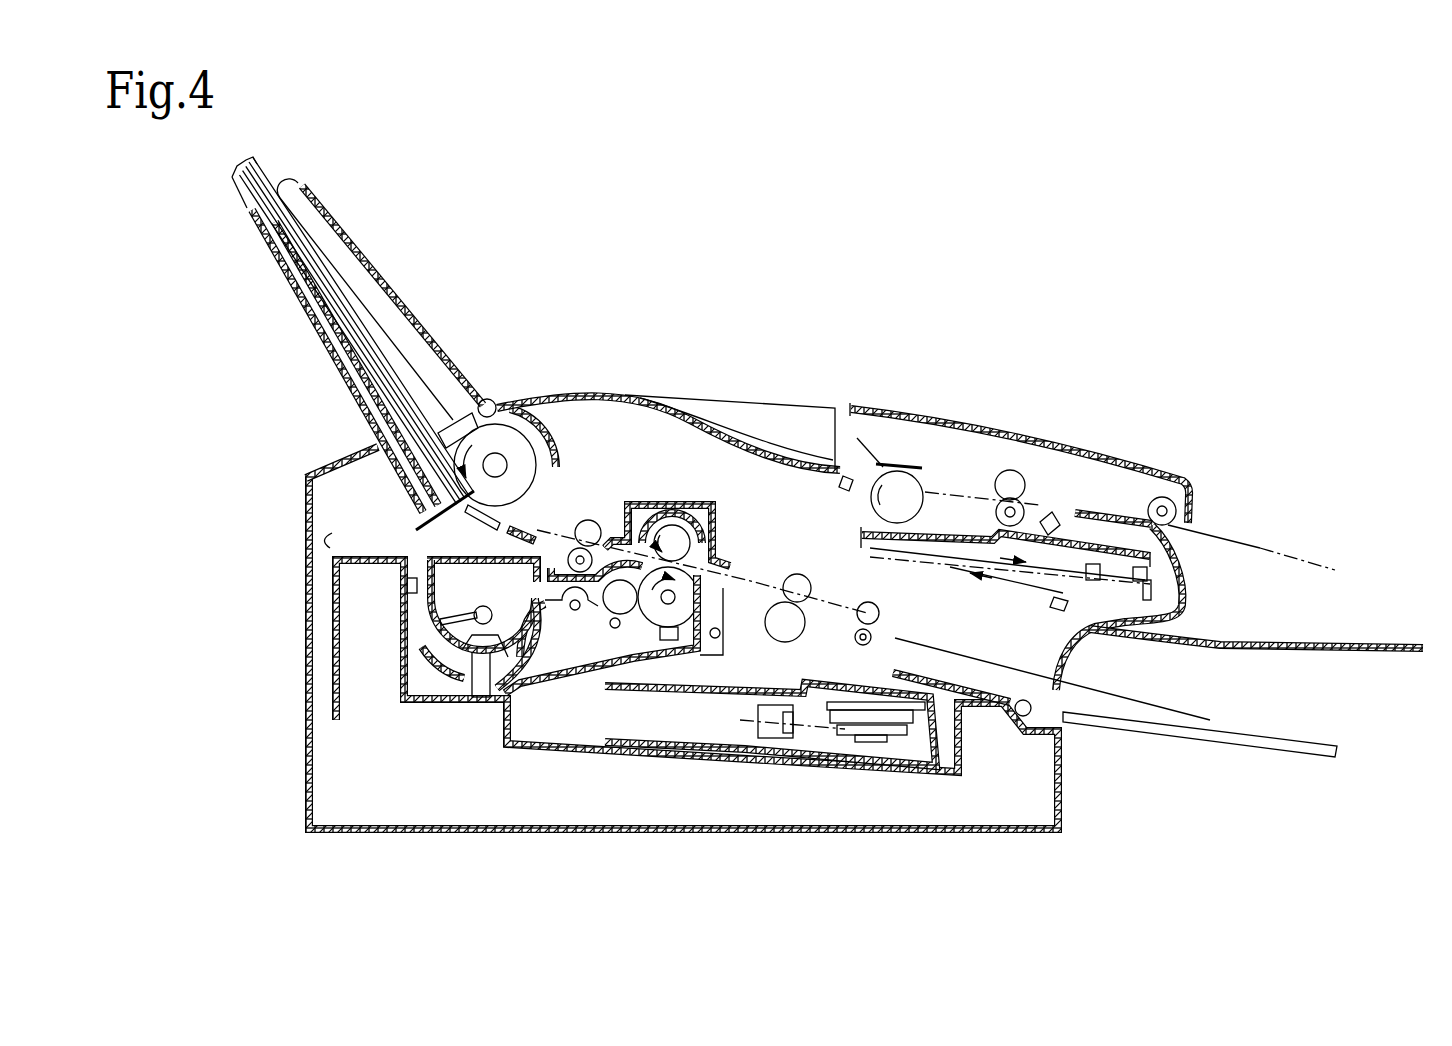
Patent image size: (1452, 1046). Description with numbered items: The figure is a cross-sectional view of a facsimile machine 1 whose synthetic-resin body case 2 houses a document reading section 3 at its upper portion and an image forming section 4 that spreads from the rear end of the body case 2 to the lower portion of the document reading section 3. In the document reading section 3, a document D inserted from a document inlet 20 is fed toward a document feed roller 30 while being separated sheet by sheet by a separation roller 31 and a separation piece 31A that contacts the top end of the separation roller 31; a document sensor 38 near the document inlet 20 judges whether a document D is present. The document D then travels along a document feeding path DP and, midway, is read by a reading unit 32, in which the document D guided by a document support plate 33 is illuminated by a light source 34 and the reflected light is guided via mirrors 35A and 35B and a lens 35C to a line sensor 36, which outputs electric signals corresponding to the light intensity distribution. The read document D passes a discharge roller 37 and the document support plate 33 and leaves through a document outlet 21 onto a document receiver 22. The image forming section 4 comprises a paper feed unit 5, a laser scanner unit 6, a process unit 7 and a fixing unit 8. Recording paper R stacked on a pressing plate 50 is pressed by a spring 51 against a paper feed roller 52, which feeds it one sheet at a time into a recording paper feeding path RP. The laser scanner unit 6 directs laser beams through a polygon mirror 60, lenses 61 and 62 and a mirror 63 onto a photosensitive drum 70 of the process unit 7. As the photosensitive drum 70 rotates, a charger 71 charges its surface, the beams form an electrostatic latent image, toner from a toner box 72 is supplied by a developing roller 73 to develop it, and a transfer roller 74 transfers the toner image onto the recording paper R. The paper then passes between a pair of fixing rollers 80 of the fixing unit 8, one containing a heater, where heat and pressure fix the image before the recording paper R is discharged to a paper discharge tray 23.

The facsimile machine 1 is at (908, 282).
The body case 2 is at (562, 398).
The document reading section 3 is at (1000, 468).
The image forming section 4 is at (378, 533).
The paper feed unit 5 is at (432, 282).
The laser scanner unit 6 is at (907, 788).
The process unit 7 is at (641, 478).
The fixing unit 8 is at (817, 620).
The document inlet 20 is at (824, 443).
The document outlet 21 is at (1195, 541).
The document receiver 22 is at (1365, 643).
The paper discharge tray 23 is at (1282, 750).
The document feed roller 30 is at (1010, 478).
The separation roller 31 is at (915, 492).
The separation piece 31A is at (880, 465).
The reading unit 32 is at (1140, 563).
The document support plate 33 is at (1108, 543).
The light source 34 is at (1060, 595).
The mirror 35A is at (1050, 607).
The mirror 35B is at (868, 548).
The lens 35C is at (1092, 582).
The line sensor 36 is at (1148, 598).
The discharge roller 37 is at (1168, 503).
The document sensor 38 is at (838, 487).
The pressing plate 50 is at (303, 318).
The spring 51 is at (345, 452).
The paper feed roller 52 is at (500, 440).
The polygon mirror 60 is at (873, 715).
The lens 61 is at (769, 738).
The lens 62 is at (617, 675).
The mirror 63 is at (640, 642).
The photosensitive drum 70 is at (680, 617).
The charger 71 is at (673, 642).
The toner box 72 is at (440, 598).
The developing roller 73 is at (600, 617).
The transfer roller 74 is at (668, 545).
The fixing rollers 80 is at (793, 585).
The recording paper R is at (312, 250).
The recording paper feeding path RP is at (578, 486).
The document D is at (740, 443).
The document feeding path DP is at (965, 465).